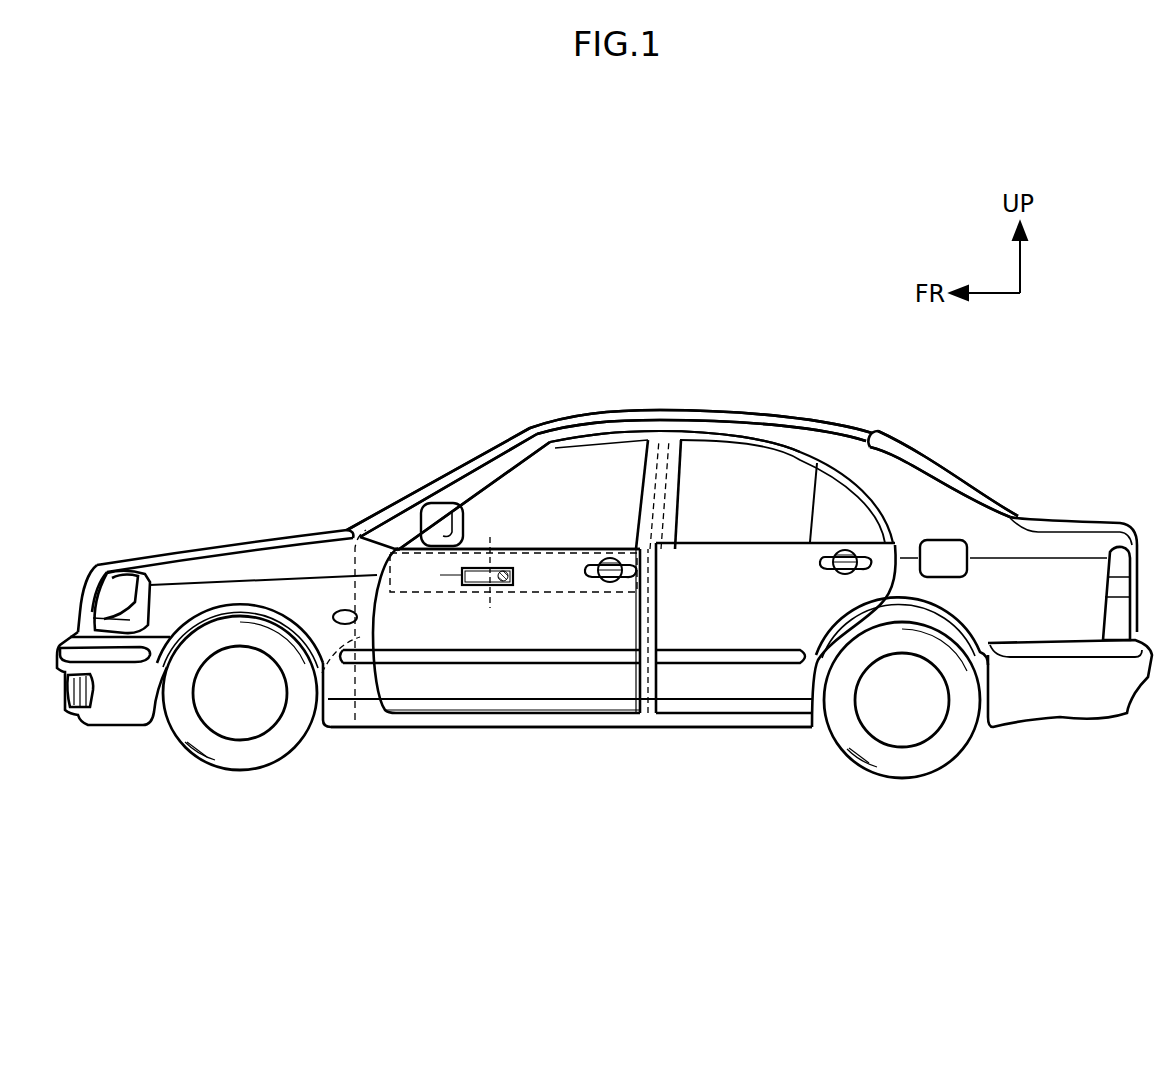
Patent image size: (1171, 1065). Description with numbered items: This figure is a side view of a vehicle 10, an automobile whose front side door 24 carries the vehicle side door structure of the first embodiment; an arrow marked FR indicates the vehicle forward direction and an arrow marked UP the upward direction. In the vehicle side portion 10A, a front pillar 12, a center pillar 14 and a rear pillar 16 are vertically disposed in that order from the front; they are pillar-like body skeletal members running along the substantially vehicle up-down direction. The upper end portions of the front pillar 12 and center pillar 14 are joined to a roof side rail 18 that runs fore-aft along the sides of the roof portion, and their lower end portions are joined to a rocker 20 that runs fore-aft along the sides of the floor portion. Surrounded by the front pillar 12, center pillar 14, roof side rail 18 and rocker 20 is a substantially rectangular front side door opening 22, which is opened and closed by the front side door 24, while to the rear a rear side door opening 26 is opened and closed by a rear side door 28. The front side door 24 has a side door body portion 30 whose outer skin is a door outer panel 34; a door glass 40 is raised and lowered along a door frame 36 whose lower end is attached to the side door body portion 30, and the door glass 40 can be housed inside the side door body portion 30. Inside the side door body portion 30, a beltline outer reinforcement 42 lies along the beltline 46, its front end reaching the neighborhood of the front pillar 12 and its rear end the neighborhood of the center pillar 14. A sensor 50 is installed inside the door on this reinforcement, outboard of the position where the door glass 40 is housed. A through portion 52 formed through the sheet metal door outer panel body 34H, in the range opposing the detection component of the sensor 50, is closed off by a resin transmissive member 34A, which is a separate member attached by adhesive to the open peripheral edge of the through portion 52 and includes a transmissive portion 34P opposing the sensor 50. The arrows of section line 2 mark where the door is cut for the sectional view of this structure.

The vehicle 10 is at (781, 252).
The vehicle side portion 10A is at (687, 741).
The front pillar 12 is at (305, 679).
The center pillar 14 is at (619, 650).
The rear pillar 16 is at (893, 500).
The roof side rail 18 is at (732, 437).
The rocker 20 is at (553, 718).
The front side door opening 22 is at (598, 452).
The front side door 24 is at (505, 676).
The rear side door opening 26 is at (770, 448).
The rear side door 28 is at (755, 682).
The side door body portion 30 is at (488, 672).
The door outer panel 34 is at (451, 667).
The transmissive member 34A is at (475, 586).
The door outer panel body 34H is at (418, 675).
The transmissive portion 34P is at (475, 568).
The door frame 36 is at (506, 456).
The door glass 40 is at (620, 462).
The beltline outer reinforcement 42 is at (566, 590).
The beltline 46 is at (571, 546).
The sensor 50 is at (453, 588).
The through portion 52 is at (514, 577).
The section line 2 is at (512, 608).